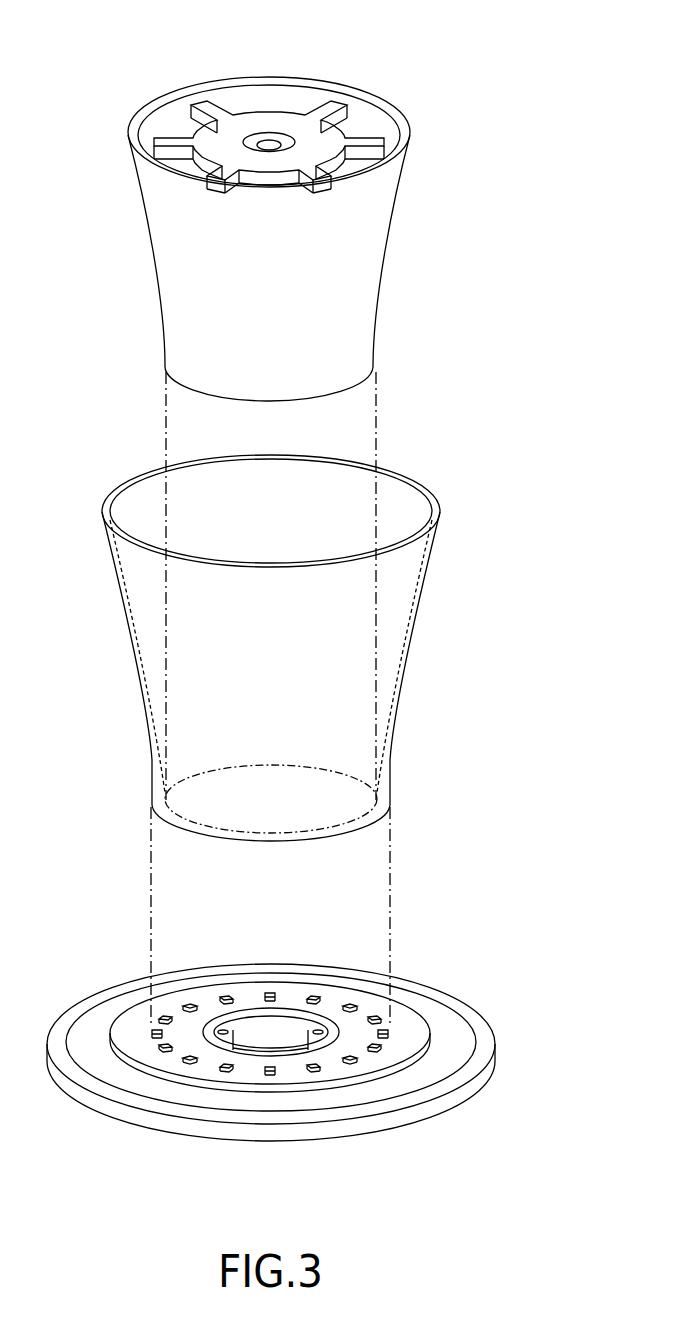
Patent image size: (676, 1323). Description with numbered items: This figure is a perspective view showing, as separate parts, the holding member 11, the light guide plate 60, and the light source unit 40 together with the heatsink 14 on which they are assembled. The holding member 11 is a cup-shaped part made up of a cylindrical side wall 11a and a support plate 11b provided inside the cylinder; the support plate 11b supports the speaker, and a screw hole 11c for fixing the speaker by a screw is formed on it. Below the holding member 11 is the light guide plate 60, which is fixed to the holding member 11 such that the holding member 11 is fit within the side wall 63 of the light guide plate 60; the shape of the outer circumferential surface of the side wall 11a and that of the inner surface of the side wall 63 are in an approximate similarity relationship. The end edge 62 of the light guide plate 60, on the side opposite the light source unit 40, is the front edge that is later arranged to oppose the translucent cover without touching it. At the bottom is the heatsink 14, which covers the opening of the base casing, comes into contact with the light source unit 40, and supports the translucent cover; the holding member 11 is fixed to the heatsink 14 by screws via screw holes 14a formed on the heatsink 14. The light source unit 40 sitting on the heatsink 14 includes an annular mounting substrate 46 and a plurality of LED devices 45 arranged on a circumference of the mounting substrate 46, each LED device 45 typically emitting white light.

The holding member 11 is at (311, 211).
The side wall 11a is at (383, 98).
The support plate 11b is at (308, 125).
The screw hole 11c is at (269, 133).
The light guide plate 60 is at (308, 648).
The end edge 62 is at (440, 504).
The side wall 63 is at (395, 712).
The heatsink 14 is at (311, 1083).
The screw hole 14a is at (222, 1030).
The light source unit 40 is at (270, 1109).
The LED device 45 is at (318, 1068).
The mounting substrate 46 is at (343, 1068).